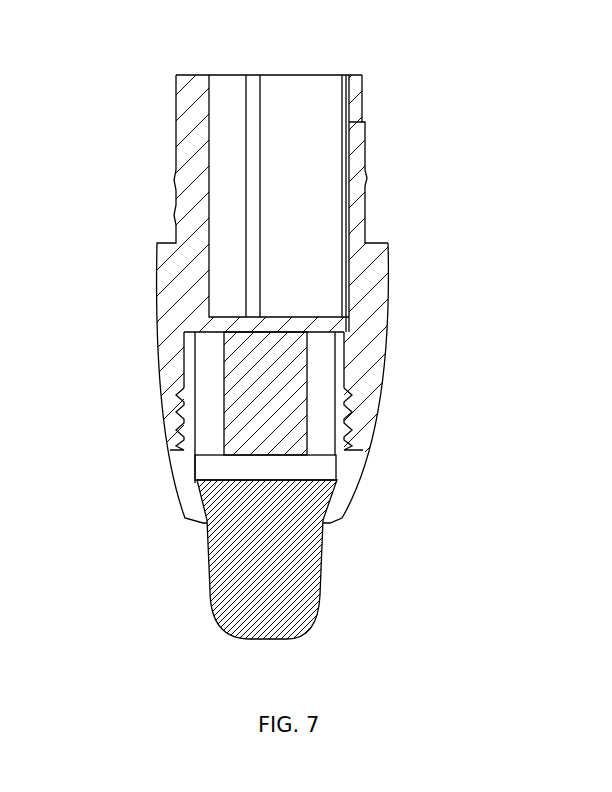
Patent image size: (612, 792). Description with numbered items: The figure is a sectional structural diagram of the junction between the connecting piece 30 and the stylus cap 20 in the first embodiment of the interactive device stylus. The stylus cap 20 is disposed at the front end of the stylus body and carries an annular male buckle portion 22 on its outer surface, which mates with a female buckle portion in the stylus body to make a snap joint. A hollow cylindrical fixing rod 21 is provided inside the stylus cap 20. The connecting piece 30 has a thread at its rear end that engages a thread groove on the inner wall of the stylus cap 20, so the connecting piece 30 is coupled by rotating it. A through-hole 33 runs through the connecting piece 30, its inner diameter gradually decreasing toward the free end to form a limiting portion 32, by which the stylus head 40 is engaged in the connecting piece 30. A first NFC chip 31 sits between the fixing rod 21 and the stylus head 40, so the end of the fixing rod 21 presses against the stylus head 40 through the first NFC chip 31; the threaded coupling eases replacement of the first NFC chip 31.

The stylus cap 20 is at (372, 307).
The fixing rod 21 is at (262, 420).
The male buckle portion 22 is at (367, 178).
The connecting piece 30 is at (358, 472).
The first NFC chip 31 is at (222, 478).
The limiting portion 32 is at (333, 517).
The through-hole 33 is at (207, 438).
The stylus head 40 is at (323, 563).